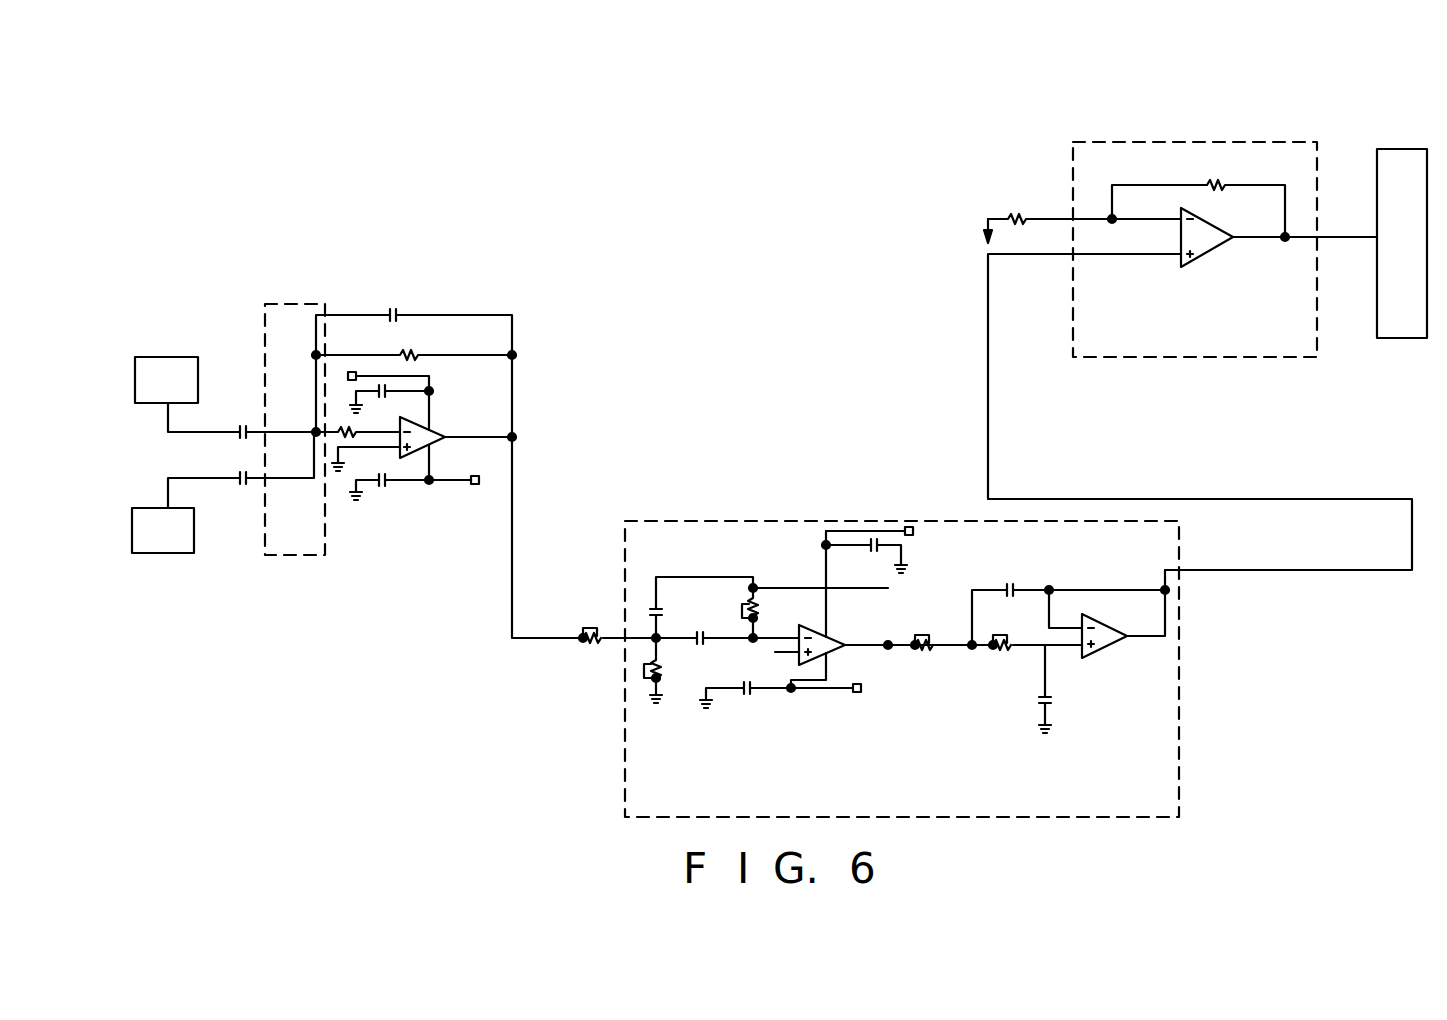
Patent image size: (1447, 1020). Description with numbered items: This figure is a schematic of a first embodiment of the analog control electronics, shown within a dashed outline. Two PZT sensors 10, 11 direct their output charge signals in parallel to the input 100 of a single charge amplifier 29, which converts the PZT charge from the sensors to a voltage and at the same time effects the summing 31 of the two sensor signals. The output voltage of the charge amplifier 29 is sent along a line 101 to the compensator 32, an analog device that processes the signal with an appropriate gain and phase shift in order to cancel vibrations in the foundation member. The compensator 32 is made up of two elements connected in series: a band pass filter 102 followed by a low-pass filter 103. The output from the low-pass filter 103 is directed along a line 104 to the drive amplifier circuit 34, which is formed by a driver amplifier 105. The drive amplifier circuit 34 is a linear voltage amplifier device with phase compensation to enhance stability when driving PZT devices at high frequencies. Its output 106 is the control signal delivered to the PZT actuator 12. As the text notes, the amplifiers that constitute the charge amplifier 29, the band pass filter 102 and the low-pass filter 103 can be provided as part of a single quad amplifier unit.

The sensor 10 is at (185, 355).
The sensor 11 is at (194, 525).
The PZT actuator 12 is at (1397, 148).
The charge amplifier 29 is at (430, 422).
The summer 31 is at (303, 558).
The compensator 32 is at (856, 521).
The drive amplifier circuit 34 is at (1217, 357).
The input 100 is at (315, 430).
The line 101 is at (478, 437).
The band pass filter 102 is at (848, 650).
The low-pass filter 103 is at (1115, 650).
The line 104 is at (1168, 596).
The driver amplifier 105 is at (1200, 233).
The output 106 is at (1333, 237).